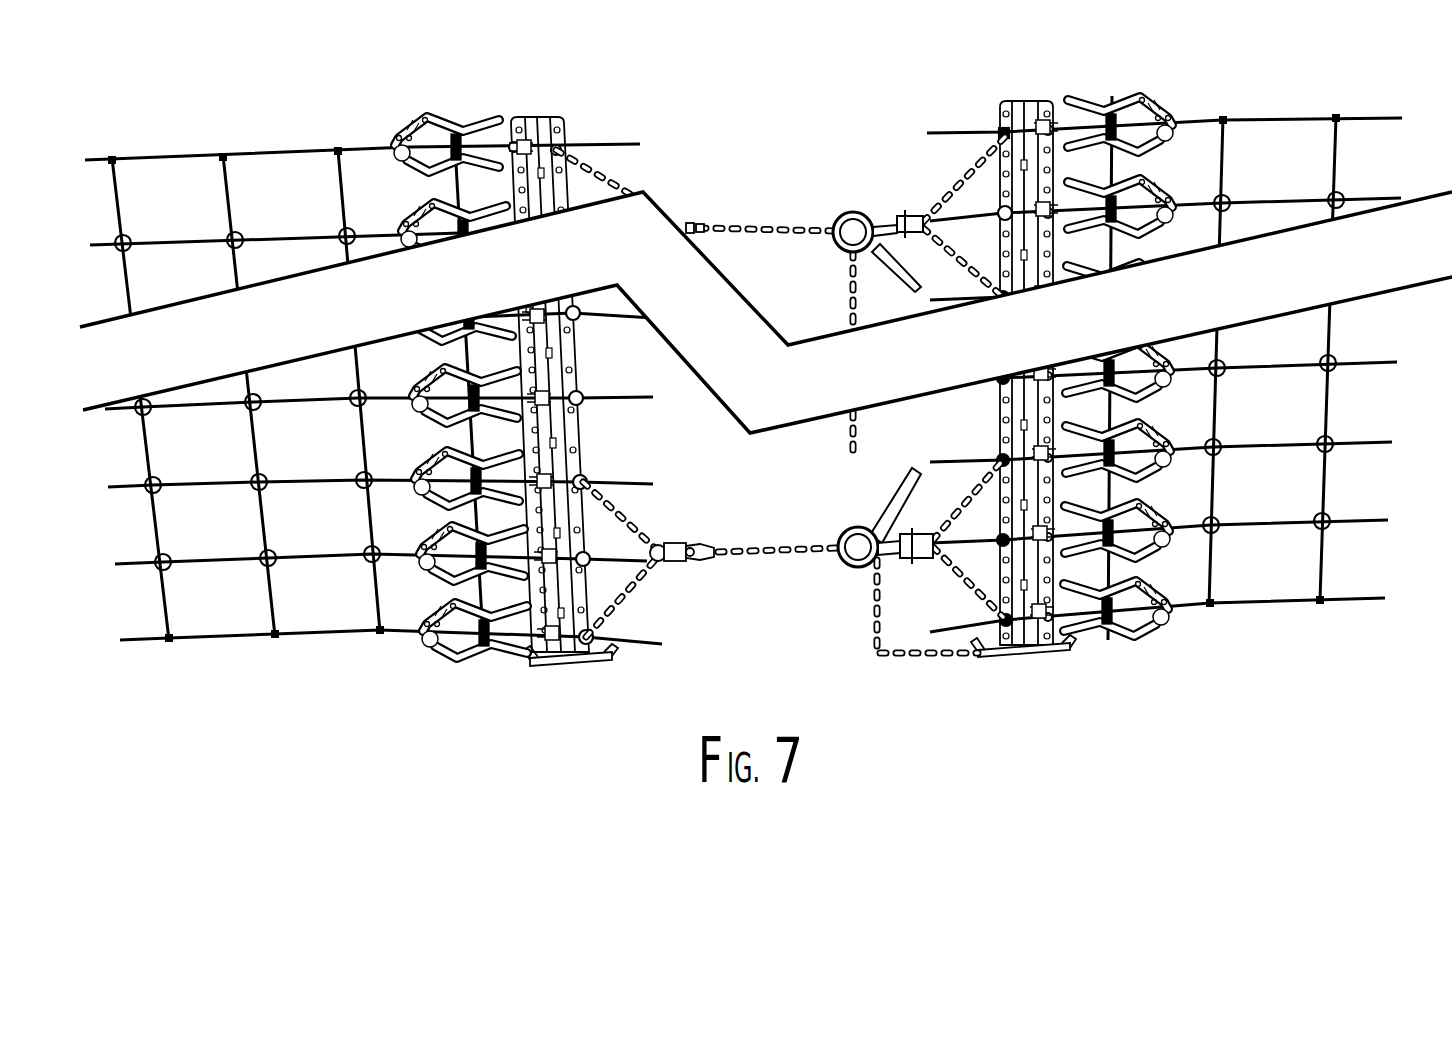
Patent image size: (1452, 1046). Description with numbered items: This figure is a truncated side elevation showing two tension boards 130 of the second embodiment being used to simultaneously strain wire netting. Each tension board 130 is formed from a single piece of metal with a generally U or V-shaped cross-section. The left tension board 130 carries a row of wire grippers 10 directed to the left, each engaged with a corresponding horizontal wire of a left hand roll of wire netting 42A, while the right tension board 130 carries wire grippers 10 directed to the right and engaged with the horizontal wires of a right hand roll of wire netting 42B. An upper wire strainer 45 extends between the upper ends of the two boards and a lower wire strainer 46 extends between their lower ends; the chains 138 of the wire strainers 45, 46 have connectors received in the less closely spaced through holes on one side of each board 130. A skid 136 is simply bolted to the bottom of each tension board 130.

The wire gripper 10 is at (794, 361).
The tension board 130 is at (807, 331).
The skid 136 is at (560, 692).
The chain 138 is at (780, 340).
The upper wire strainer 45 is at (878, 207).
The lower wire strainer 46 is at (848, 517).
The left hand roll of wire netting 42A is at (373, 428).
The right hand roll of wire netting 42B is at (1164, 392).